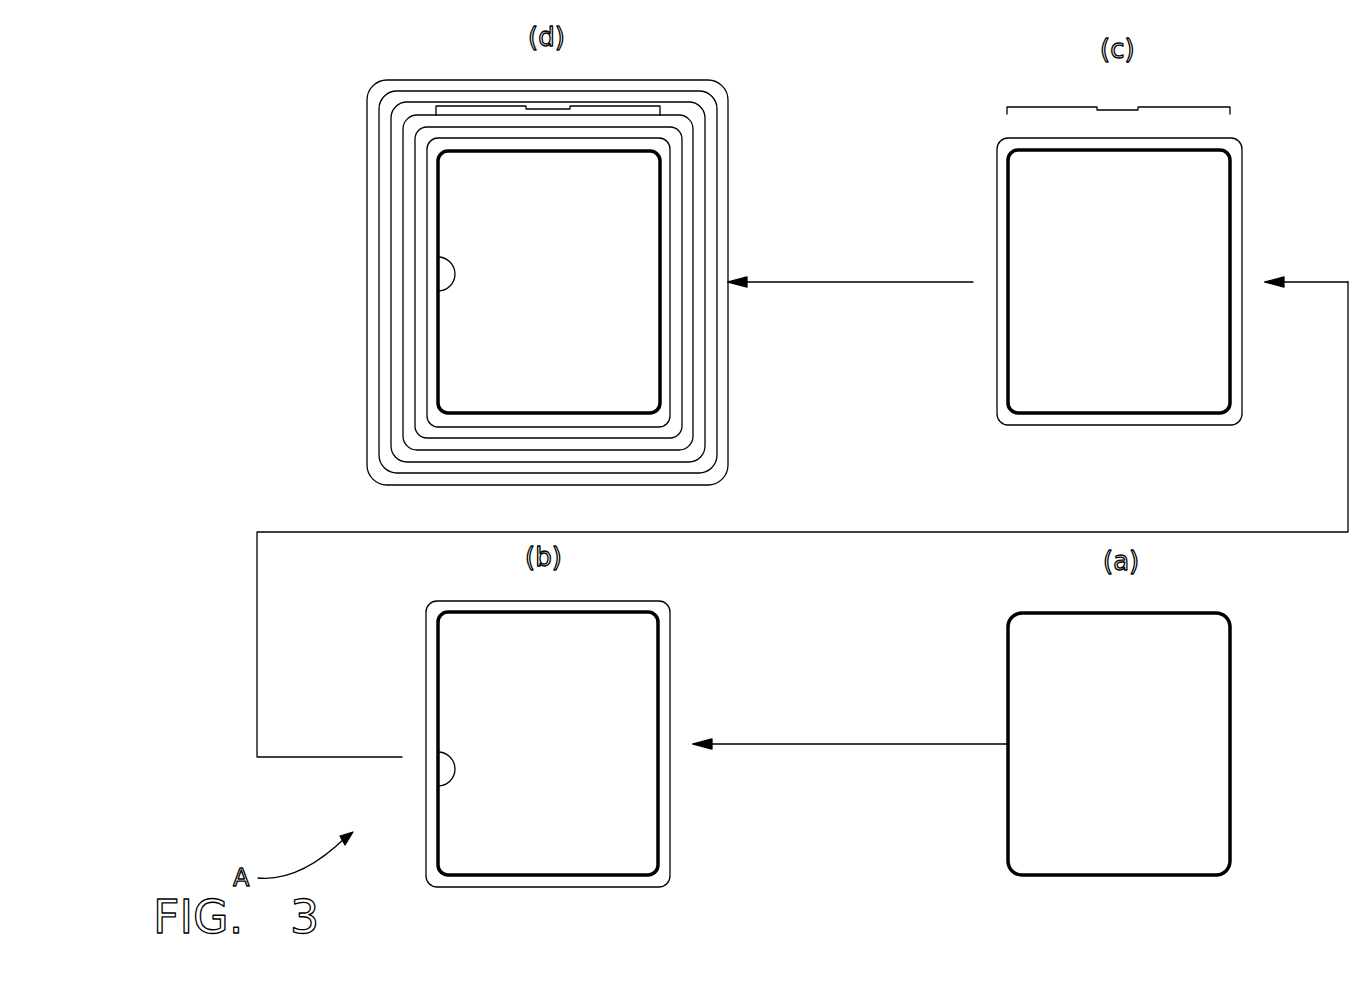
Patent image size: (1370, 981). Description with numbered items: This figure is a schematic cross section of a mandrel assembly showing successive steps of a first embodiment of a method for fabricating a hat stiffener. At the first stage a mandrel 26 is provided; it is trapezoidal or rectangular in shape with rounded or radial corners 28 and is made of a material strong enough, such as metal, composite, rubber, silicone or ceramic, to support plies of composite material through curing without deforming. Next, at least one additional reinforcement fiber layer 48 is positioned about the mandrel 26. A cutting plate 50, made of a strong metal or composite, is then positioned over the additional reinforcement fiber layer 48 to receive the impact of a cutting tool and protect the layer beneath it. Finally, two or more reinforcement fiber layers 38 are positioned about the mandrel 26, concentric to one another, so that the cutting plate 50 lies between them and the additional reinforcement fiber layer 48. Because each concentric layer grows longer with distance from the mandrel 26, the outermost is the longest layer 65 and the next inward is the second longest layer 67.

The mandrel 26 is at (809, 523).
The rounded or radial corners 28 is at (1012, 617).
The reinforcement fiber layers 38 is at (697, 92).
The additional reinforcement fiber layer 48 is at (645, 113).
The cutting plate 50 is at (473, 110).
The longest layer 65 is at (484, 68).
The second longest layer 67 is at (552, 95).